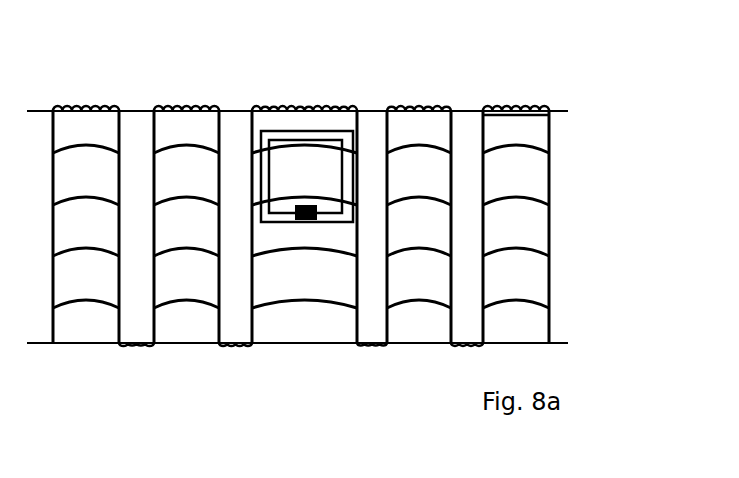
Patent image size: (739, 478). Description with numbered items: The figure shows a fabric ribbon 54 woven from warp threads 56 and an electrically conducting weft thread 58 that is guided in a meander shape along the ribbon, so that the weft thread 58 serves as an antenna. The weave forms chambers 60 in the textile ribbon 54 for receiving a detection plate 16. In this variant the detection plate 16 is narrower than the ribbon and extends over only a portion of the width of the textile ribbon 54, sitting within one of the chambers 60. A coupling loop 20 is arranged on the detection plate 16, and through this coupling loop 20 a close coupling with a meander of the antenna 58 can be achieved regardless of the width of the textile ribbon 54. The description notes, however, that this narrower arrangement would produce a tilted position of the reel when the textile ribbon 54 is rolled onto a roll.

The fabric ribbon 54 is at (468, 88).
The electrically conducting weft thread 58 is at (128, 199).
The coupling loop 20 is at (329, 138).
The warp threads 56 is at (295, 367).
The chambers 60 is at (304, 332).
The detection plate 16 is at (316, 290).